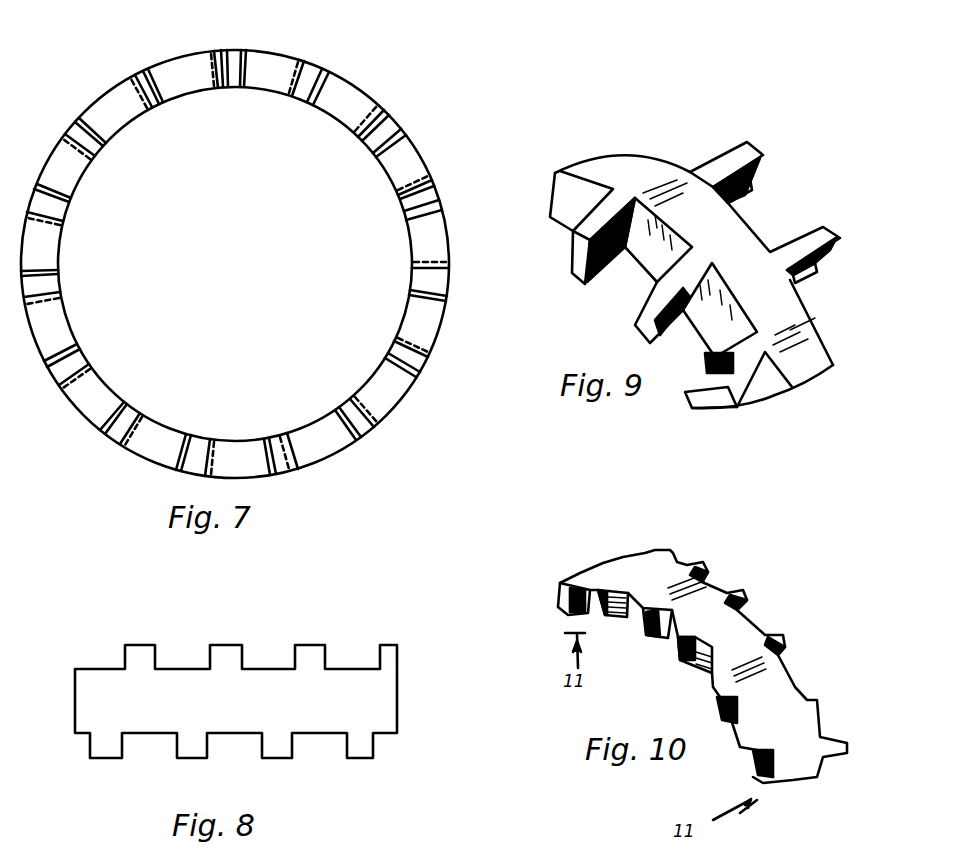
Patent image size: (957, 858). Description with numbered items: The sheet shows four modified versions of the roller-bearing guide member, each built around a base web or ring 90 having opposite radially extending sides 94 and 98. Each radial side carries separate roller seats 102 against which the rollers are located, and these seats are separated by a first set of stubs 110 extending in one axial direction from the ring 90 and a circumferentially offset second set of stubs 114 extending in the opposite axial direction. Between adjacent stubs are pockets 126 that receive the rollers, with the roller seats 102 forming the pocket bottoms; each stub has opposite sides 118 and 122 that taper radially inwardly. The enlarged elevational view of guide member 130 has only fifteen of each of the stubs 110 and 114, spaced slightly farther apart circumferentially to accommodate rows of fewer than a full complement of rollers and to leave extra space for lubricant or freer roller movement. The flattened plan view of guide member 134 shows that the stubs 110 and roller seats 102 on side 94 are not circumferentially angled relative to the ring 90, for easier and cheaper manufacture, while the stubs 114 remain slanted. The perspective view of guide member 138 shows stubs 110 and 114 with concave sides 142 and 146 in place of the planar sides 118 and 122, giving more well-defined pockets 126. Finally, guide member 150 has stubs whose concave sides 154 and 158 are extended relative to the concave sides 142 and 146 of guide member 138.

In FIG. 7, the ring 90 is at (178, 50).
In FIG. 8, the ring 90 is at (370, 710).
In FIG. 9, the ring 90 is at (802, 368).
In FIG. 10, the ring 90 is at (620, 562).
In FIG. 8, the radial side 94 is at (101, 647).
In FIG. 7, the radial side 98 is at (383, 193).
In FIG. 8, the radial side 98 is at (80, 748).
In FIG. 8, the roller seats 102 is at (265, 668).
In FIG. 9, the roller seats 102 is at (733, 310).
In FIG. 10, the roller seats 102 is at (798, 670).
In FIG. 8, the stubs 110 is at (150, 650).
In FIG. 9, the stubs 110 is at (572, 277).
In FIG. 10, the stubs 110 is at (720, 712).
In FIG. 7, the stubs 114 is at (362, 133).
In FIG. 8, the stubs 114 is at (110, 755).
In FIG. 9, the stubs 114 is at (745, 153).
In FIG. 10, the stubs 114 is at (743, 595).
In FIG. 7, the stub side 118 is at (256, 56).
In FIG. 7, the stub side 122 is at (294, 42).
In FIG. 7, the pockets 126 is at (413, 257).
In FIG. 9, the pockets 126 is at (812, 197).
In FIG. 7, the guide member 130 is at (470, 100).
In FIG. 8, the guide member 134 is at (368, 598).
In FIG. 9, the guide member 138 is at (663, 122).
In FIG. 9, the concave side 142 is at (637, 320).
In FIG. 9, the concave side 146 is at (742, 178).
In FIG. 10, the guide member 150 is at (783, 540).
In FIG. 10, the concave side 154 is at (665, 652).
In FIG. 10, the concave side 158 is at (655, 642).